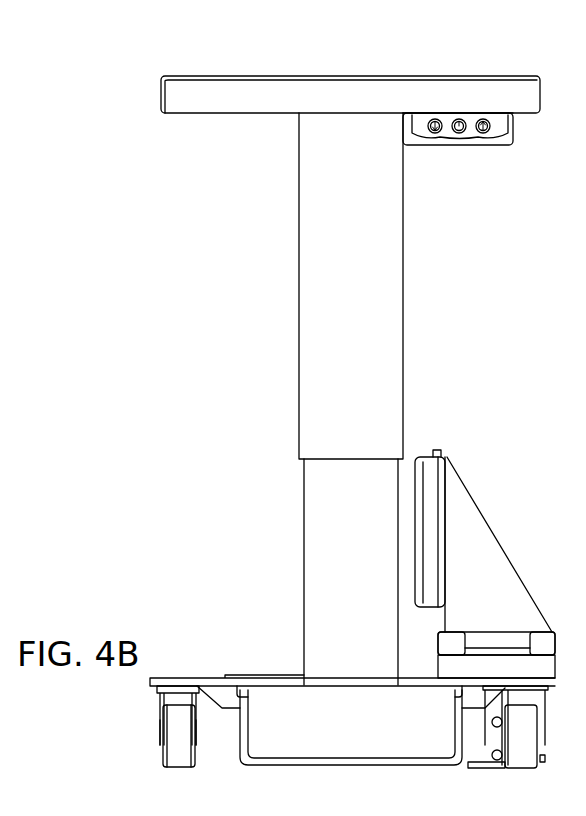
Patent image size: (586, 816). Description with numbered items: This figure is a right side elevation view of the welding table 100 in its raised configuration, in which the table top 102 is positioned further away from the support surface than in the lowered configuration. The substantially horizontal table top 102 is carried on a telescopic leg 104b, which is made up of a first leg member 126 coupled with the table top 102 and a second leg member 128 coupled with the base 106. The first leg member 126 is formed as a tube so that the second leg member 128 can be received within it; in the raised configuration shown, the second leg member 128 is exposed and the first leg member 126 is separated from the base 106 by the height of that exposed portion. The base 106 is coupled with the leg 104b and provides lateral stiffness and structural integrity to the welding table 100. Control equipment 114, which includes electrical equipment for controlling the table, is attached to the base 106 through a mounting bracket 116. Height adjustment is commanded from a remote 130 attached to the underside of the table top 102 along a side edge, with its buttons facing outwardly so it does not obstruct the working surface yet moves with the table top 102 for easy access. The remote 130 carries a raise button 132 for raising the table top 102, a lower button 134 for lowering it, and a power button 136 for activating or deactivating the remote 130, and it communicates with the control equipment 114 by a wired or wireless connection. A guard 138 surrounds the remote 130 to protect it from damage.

The welding table 100 is at (372, 62).
The table top 102 is at (225, 79).
The leg 104b is at (272, 323).
The base 106 is at (242, 663).
The control equipment 114 is at (450, 570).
The mounting bracket 116 is at (470, 519).
The first leg member 126 is at (316, 224).
The second leg member 128 is at (316, 558).
The remote 130 is at (497, 135).
The raise button 132 is at (478, 133).
The lower button 134 is at (435, 134).
The power button 136 is at (462, 119).
The guard 138 is at (513, 118).